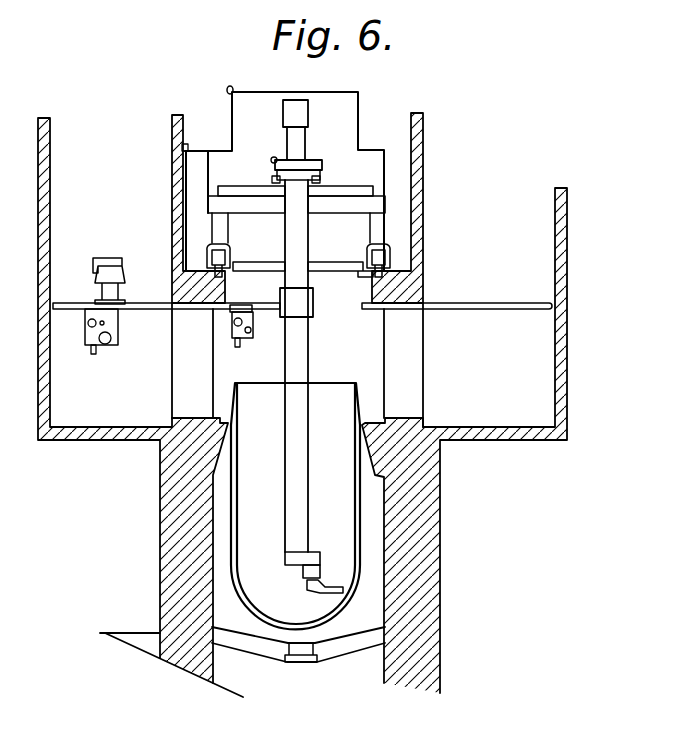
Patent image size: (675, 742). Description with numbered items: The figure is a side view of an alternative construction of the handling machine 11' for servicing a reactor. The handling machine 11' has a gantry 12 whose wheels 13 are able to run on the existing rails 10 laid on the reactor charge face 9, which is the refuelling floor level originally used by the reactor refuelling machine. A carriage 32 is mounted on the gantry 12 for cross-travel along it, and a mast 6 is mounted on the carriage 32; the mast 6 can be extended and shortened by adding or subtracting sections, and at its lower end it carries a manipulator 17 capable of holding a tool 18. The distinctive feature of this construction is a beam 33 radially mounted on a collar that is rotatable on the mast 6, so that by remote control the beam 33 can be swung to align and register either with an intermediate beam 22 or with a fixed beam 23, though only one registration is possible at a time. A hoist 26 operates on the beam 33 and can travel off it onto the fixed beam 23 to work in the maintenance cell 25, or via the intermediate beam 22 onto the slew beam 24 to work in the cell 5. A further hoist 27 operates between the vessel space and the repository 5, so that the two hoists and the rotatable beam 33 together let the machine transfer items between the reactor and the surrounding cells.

The repository 5 is at (112, 401).
The mast 6 is at (300, 110).
The reactor charge face 9 is at (197, 270).
The rails 10 is at (222, 203).
The handling machine 11' is at (342, 147).
The gantry 12 is at (318, 212).
The wheels 13 is at (212, 243).
The manipulator 17 is at (303, 567).
The tool 18 is at (333, 583).
The intermediate beam 22 is at (183, 305).
The fixed beam 23 is at (497, 303).
The slew beam 24 is at (143, 306).
The maintenance cell 25 is at (496, 361).
The hoist 26 is at (255, 321).
The hoist 27 is at (113, 323).
The carriage 32 is at (256, 186).
The beam 33 is at (272, 296).